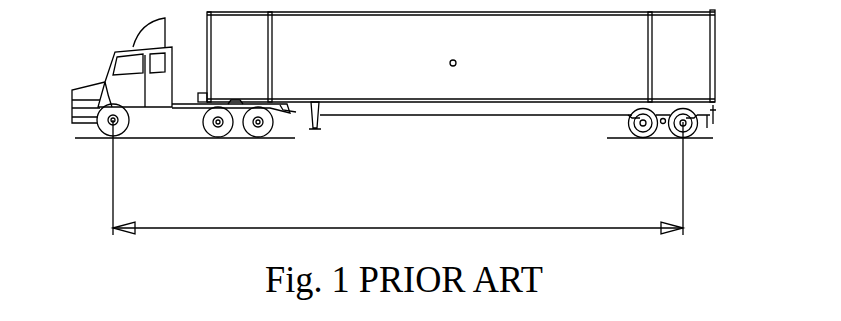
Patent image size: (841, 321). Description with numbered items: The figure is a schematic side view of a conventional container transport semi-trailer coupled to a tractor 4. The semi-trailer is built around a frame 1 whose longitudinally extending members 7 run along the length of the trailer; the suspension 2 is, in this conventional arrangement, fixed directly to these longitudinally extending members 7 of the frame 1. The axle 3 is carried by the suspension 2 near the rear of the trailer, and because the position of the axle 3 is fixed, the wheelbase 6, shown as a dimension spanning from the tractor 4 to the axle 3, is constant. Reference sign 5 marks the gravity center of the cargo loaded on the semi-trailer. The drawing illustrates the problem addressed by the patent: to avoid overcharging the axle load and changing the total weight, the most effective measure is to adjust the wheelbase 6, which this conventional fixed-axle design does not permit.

The frame 1 is at (428, 113).
The suspension 2 is at (628, 115).
The axle 3 is at (643, 126).
The tractor 4 is at (145, 107).
The gravity center of the cargo 5 is at (452, 66).
The wheelbase 6 is at (470, 227).
The longitudinally extending members 7 is at (560, 107).